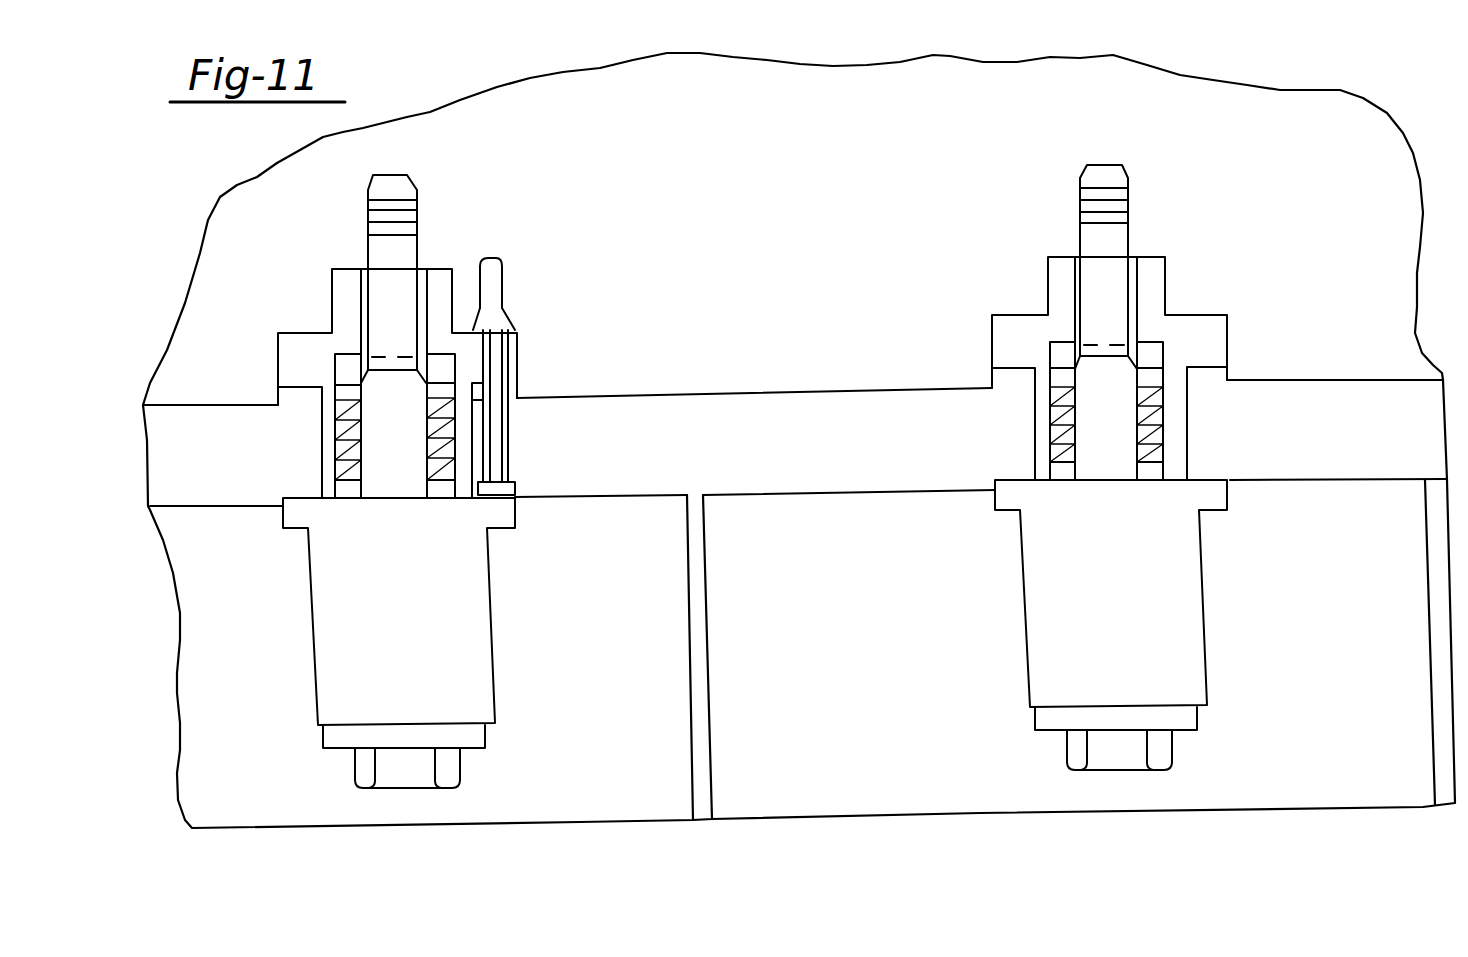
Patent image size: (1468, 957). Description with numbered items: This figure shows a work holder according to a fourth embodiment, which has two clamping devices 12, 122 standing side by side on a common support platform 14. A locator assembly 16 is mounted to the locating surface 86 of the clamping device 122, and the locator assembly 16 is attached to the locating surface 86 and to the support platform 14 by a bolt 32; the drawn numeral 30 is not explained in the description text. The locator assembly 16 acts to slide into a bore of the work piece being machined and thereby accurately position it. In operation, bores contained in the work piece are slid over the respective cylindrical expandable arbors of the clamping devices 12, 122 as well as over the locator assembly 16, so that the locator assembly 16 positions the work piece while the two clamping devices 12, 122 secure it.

The clamping device 12 is at (1193, 302).
The support platform 14 is at (792, 400).
The locator assembly 16 is at (593, 262).
The locating pin 30 is at (487, 270).
The bolt 32 is at (495, 360).
The locating surface 86 is at (514, 330).
The clamping device 122 is at (469, 460).